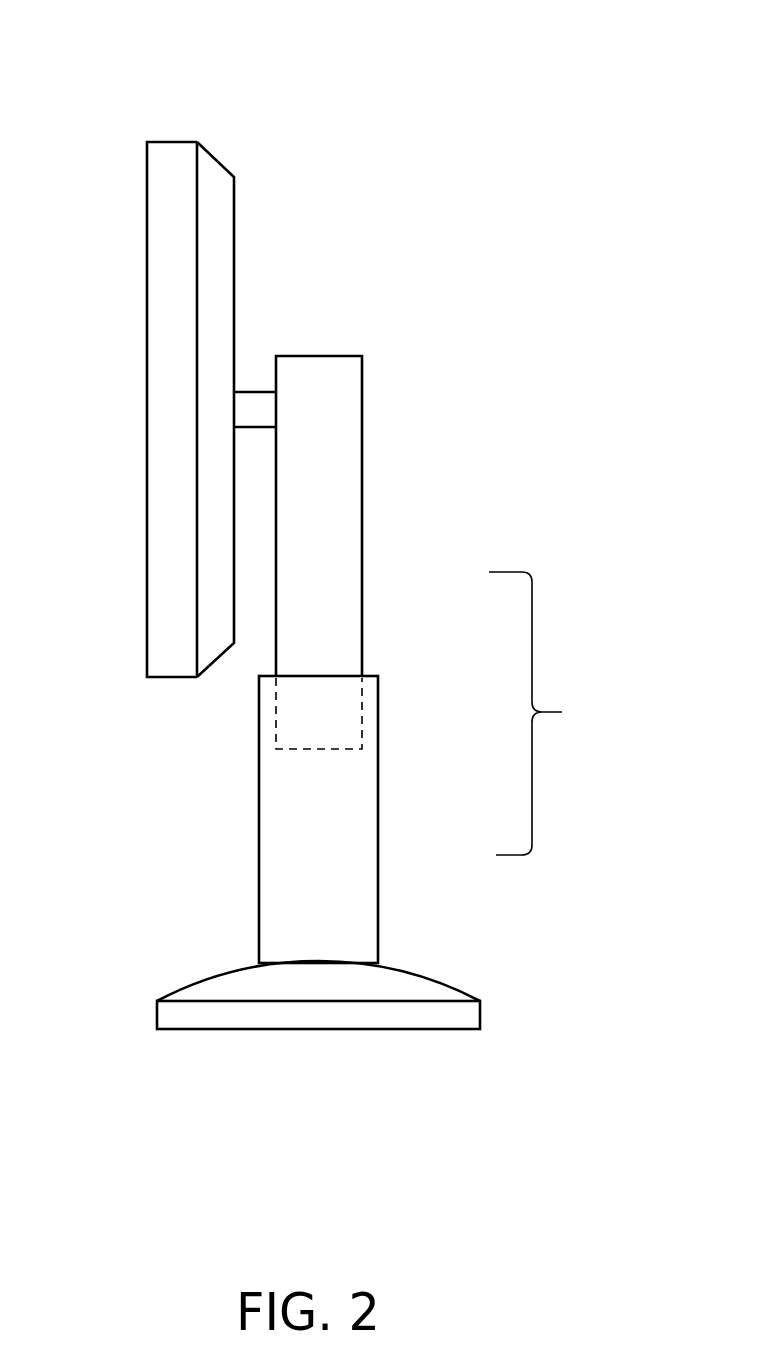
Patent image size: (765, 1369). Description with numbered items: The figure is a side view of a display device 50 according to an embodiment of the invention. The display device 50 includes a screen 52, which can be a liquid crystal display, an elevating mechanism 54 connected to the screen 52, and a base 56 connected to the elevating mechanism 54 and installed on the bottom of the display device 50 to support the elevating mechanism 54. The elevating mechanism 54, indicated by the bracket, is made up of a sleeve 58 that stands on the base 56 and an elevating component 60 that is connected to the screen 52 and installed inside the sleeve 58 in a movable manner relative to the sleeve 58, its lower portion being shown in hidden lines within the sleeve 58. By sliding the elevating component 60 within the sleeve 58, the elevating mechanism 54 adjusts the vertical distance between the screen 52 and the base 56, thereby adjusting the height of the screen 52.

The display device 50 is at (482, 73).
The screen 52 is at (217, 232).
The elevating mechanism 54 is at (543, 713).
The base 56 is at (427, 987).
The sleeve 58 is at (352, 851).
The elevating component 60 is at (347, 638).